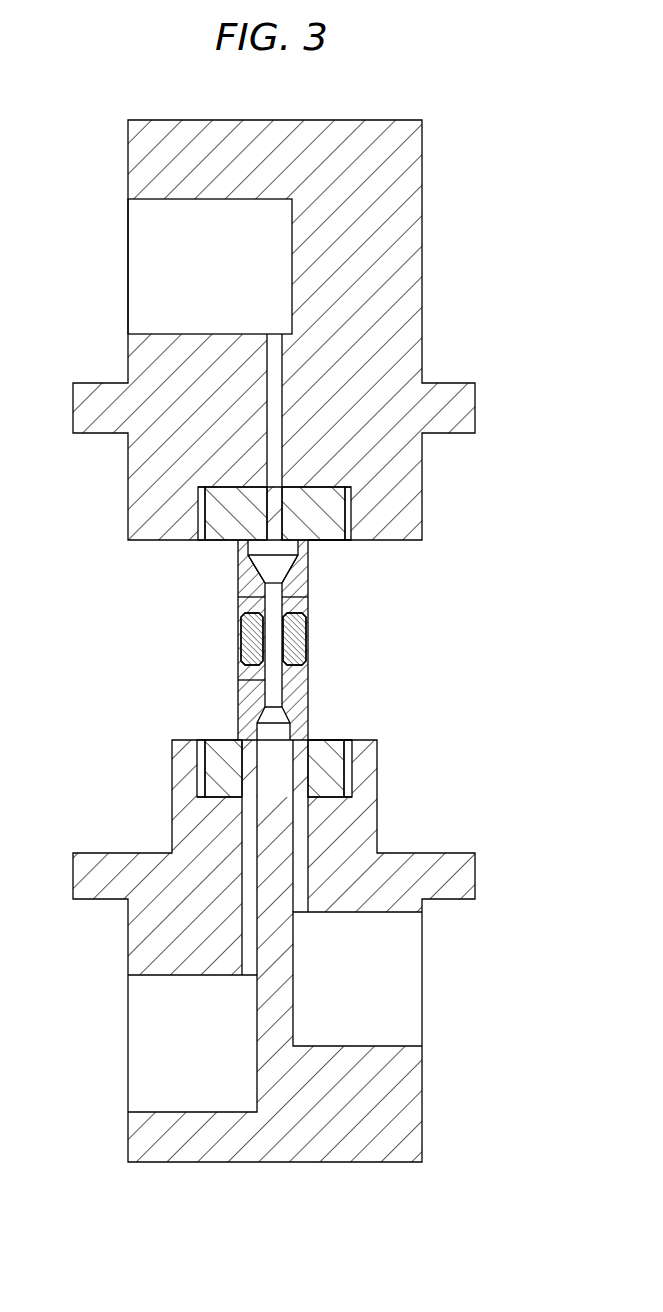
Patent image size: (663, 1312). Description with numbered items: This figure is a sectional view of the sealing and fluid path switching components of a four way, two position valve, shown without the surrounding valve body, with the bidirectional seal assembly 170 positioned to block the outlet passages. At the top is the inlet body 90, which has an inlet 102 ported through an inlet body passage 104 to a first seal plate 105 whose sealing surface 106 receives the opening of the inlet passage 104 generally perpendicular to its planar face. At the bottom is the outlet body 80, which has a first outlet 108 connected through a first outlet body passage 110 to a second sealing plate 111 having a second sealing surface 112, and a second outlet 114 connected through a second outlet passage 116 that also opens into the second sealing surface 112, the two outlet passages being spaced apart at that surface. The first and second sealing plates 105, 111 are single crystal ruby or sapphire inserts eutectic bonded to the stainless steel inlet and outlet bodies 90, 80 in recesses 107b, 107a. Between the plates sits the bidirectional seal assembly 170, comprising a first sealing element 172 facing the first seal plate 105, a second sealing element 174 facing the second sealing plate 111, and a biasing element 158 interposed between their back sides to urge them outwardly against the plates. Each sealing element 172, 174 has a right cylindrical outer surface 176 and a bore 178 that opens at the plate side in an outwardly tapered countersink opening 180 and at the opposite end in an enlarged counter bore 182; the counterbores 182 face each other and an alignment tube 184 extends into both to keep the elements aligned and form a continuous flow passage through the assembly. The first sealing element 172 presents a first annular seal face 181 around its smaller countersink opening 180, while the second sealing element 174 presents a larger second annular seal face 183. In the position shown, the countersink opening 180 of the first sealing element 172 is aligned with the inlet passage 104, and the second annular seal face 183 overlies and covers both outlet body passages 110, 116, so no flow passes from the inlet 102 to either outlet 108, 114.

The outlet body 80 is at (476, 872).
The inlet body 90 is at (458, 330).
The inlet 102 is at (152, 262).
The inlet body passage 104 is at (275, 436).
The first seal plate 105 is at (333, 512).
The sealing surface 106 is at (335, 540).
The recess 107a is at (350, 752).
The recess 107b is at (345, 490).
The first outlet 108 is at (148, 1042).
The first outlet body passage 110 is at (242, 833).
The second sealing plate 111 is at (328, 766).
The second sealing surface 112 is at (332, 740).
The second outlet 114 is at (398, 983).
The second outlet passage 116 is at (308, 838).
The biasing element 158 is at (250, 642).
The bidirectional seal assembly 170 is at (278, 621).
The first sealing element 172 is at (245, 600).
The second sealing element 174 is at (245, 697).
The outer surface 176 is at (310, 607).
The bore 178 is at (248, 578).
The countersink opening 180 is at (260, 542).
The first annular seal face 181 is at (305, 540).
The counter bore 182 is at (245, 618).
The second annular seal face 183 is at (210, 755).
The alignment tube 184 is at (298, 596).